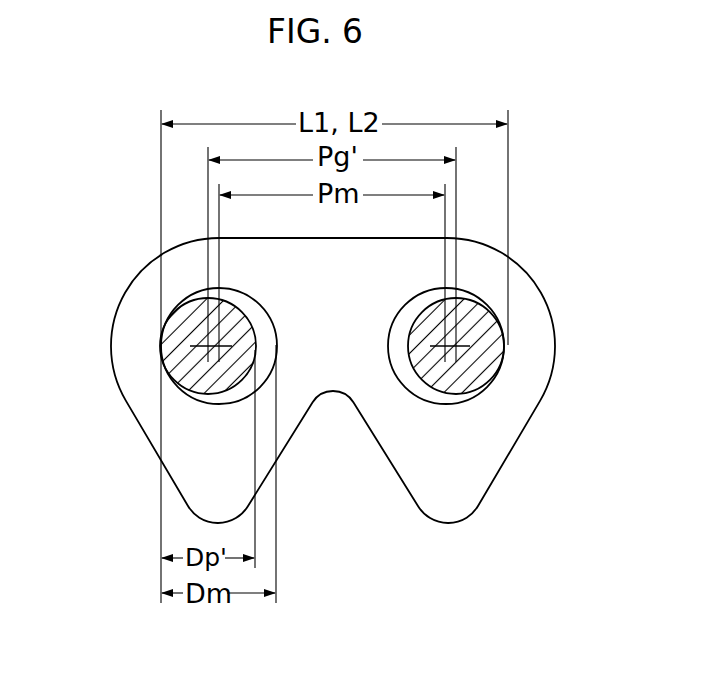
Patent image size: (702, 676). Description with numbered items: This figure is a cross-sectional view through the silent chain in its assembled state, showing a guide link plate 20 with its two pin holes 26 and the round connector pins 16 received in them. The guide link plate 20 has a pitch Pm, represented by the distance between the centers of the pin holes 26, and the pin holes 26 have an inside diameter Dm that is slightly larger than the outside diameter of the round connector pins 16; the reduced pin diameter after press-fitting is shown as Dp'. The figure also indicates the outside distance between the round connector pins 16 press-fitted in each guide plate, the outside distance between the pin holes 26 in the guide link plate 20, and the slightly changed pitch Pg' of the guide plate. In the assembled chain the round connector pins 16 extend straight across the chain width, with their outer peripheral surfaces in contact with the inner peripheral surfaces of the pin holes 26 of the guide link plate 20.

The guide link plate 20 is at (543, 289).
The round connector pins 16 is at (484, 359).
The pin holes 26 is at (420, 397).